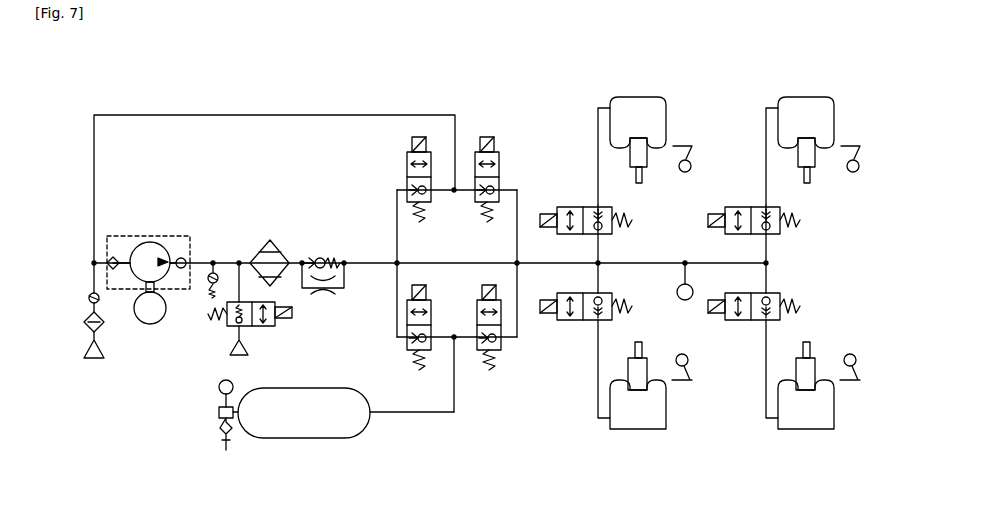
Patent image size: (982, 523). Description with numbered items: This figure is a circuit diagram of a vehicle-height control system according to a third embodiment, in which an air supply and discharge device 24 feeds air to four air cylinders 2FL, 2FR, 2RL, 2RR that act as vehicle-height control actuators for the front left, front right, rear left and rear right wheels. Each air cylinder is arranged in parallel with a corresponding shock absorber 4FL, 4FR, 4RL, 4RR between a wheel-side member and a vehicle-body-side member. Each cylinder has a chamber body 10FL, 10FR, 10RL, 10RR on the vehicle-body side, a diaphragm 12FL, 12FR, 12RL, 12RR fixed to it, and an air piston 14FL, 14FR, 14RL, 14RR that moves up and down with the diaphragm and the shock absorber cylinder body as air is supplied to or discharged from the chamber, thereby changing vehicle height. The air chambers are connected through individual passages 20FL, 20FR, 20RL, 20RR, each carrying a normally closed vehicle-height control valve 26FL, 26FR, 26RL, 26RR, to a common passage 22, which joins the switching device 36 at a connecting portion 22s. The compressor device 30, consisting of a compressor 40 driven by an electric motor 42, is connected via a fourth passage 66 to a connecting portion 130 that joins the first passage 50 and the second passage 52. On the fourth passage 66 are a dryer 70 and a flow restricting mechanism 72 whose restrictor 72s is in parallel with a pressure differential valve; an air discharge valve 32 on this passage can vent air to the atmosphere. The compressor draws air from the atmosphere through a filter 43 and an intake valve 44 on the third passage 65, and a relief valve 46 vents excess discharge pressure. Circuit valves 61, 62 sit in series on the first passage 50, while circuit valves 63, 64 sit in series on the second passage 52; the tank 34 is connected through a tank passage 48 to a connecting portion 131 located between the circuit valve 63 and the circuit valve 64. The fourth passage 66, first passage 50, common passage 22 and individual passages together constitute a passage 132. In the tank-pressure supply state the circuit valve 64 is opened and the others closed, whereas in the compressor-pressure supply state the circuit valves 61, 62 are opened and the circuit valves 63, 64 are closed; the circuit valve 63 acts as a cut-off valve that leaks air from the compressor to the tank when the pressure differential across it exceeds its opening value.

The front left air cylinder 2FL is at (634, 137).
The front right air cylinder 2FR is at (631, 394).
The rear left air cylinder 2RL is at (803, 137).
The rear right air cylinder 2RR is at (800, 394).
The front left shock absorber 4FL is at (645, 176).
The front right shock absorber 4FR is at (645, 350).
The rear left shock absorber 4RL is at (813, 176).
The rear right shock absorber 4RR is at (813, 350).
The chamber body 10FL is at (609, 142).
The chamber body 10FR is at (605, 391).
The chamber body 10RL is at (777, 142).
The chamber body 10RR is at (773, 391).
The diaphragm 12FL is at (612, 147).
The diaphragm 12FR is at (612, 382).
The diaphragm 12RL is at (780, 147).
The diaphragm 12RR is at (780, 382).
The air piston 14FL is at (630, 160).
The air piston 14FR is at (630, 370).
The air piston 14RL is at (798, 160).
The air piston 14RR is at (798, 370).
The individual passage 20FL is at (598, 187).
The individual passage 20FR is at (598, 342).
The individual passage 20RL is at (766, 187).
The individual passage 20RR is at (766, 342).
The vehicle-height control valve 26FL is at (604, 235).
The vehicle-height control valve 26FR is at (603, 293).
The vehicle-height control valve 26RL is at (772, 235).
The vehicle-height control valve 26RR is at (771, 293).
The common passage 22 is at (540, 263).
The connecting portion 22s is at (517, 263).
The air supply and discharge device 24 is at (302, 84).
The compressor device 30 is at (121, 293).
The air discharge valve 32 is at (270, 328).
The tank 34 is at (337, 397).
The switching device 36 is at (472, 372).
The compressor 40 is at (152, 237).
The electric motor 42 is at (140, 316).
The filter 43 is at (85, 320).
The intake valve 44 is at (89, 296).
The relief valve 46 is at (213, 286).
The tank passage 48 is at (400, 414).
The first passage 50 is at (439, 270).
The second passage 52 is at (397, 287).
The circuit valve 61 is at (407, 164).
The circuit valve 62 is at (499, 166).
The circuit valve 63 is at (431, 304).
The circuit valve 64 is at (501, 304).
The third passage 65 is at (373, 115).
The fourth passage 66 is at (365, 263).
The dryer 70 is at (260, 251).
The flow restricting mechanism 72 is at (314, 244).
The restrictor 72s is at (326, 294).
The connecting portion 130 is at (397, 263).
The connecting portion 131 is at (454, 340).
The passage 132 is at (527, 202).